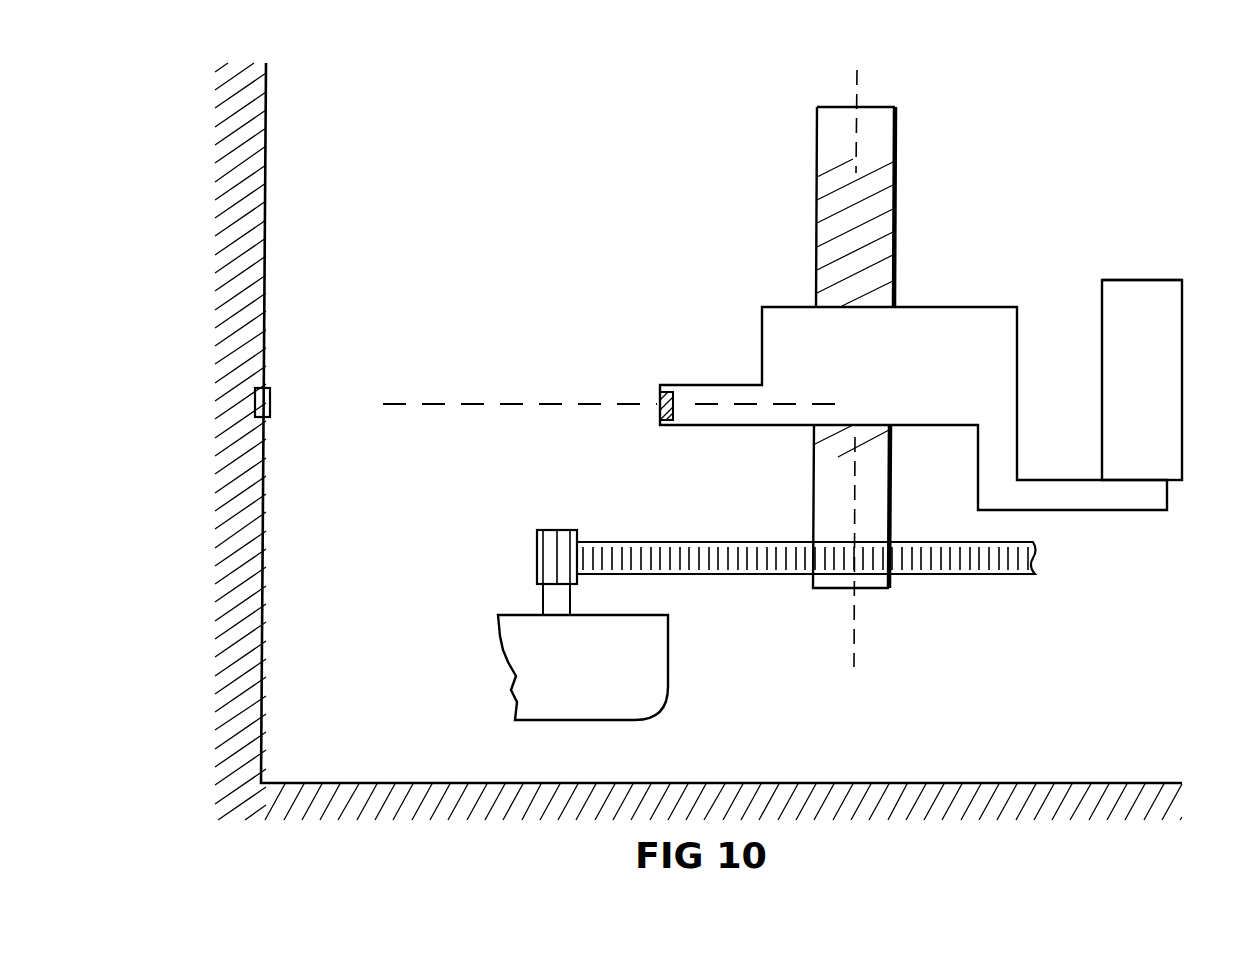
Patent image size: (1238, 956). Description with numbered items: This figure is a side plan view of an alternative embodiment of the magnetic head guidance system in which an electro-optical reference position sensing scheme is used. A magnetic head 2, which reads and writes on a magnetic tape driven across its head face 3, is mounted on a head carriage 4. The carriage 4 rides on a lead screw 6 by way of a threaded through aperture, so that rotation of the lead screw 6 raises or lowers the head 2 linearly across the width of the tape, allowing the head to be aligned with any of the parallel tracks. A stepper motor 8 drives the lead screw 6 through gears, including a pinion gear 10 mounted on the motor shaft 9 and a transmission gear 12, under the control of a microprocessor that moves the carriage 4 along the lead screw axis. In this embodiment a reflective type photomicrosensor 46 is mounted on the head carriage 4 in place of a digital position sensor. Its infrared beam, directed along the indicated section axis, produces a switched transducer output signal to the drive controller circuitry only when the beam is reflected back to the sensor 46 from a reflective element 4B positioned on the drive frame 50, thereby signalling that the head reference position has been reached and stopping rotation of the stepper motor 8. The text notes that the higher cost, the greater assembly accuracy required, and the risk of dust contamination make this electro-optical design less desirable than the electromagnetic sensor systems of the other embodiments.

The drive frame 50 is at (162, 432).
The limit sensor on wall 4B is at (270, 393).
The lead screw 6 is at (895, 193).
The head carriage 4 is at (775, 306).
The reflective type photomicrosensor 46 is at (659, 395).
The head face 3 is at (1182, 357).
The magnetic head 2 is at (1143, 280).
The transmission gear 12 is at (941, 576).
The pinion gear 10 is at (537, 538).
The motor shaft 9 is at (543, 599).
The stepper motor 8 is at (668, 677).